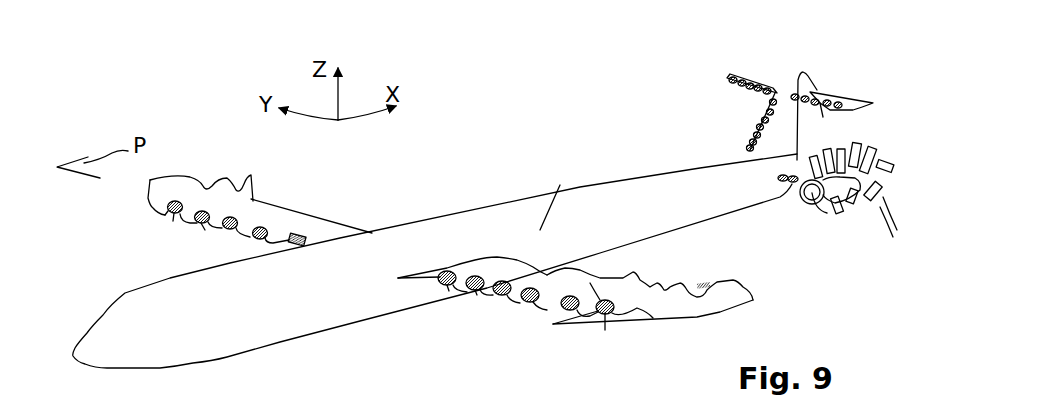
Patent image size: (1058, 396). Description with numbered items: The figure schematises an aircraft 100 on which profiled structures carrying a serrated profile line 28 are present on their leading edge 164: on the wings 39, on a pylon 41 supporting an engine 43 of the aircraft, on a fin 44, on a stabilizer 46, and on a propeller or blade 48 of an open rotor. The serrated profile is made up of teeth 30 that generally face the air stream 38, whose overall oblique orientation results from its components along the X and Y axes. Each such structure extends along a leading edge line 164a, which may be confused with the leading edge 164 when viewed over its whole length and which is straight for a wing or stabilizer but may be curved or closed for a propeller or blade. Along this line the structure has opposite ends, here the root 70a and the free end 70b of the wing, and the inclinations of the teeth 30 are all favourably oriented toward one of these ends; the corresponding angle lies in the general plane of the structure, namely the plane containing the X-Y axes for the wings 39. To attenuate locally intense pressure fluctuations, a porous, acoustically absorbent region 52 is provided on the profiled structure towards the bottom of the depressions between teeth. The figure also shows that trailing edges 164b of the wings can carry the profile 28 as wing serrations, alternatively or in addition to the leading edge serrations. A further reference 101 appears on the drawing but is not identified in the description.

The serrated profile line 28 is at (255, 205).
The teeth 30 is at (605, 330).
The air stream 38 is at (592, 283).
The wings 39 is at (257, 209).
The pylon 41 is at (798, 160).
The engine 43 is at (893, 170).
The fin 44 is at (758, 130).
The stabilizer 46 is at (760, 72).
The propeller or blade of an open rotor 48 is at (897, 232).
The porous acoustically absorbent region 52 is at (300, 237).
The root 70a is at (475, 259).
The free end 70b is at (707, 300).
The aircraft 100 is at (293, 343).
The fuselage body 101 is at (567, 223).
The leading edge 164 is at (220, 232).
The leading edge line 164a is at (477, 295).
The trailing edges 164b is at (207, 188).